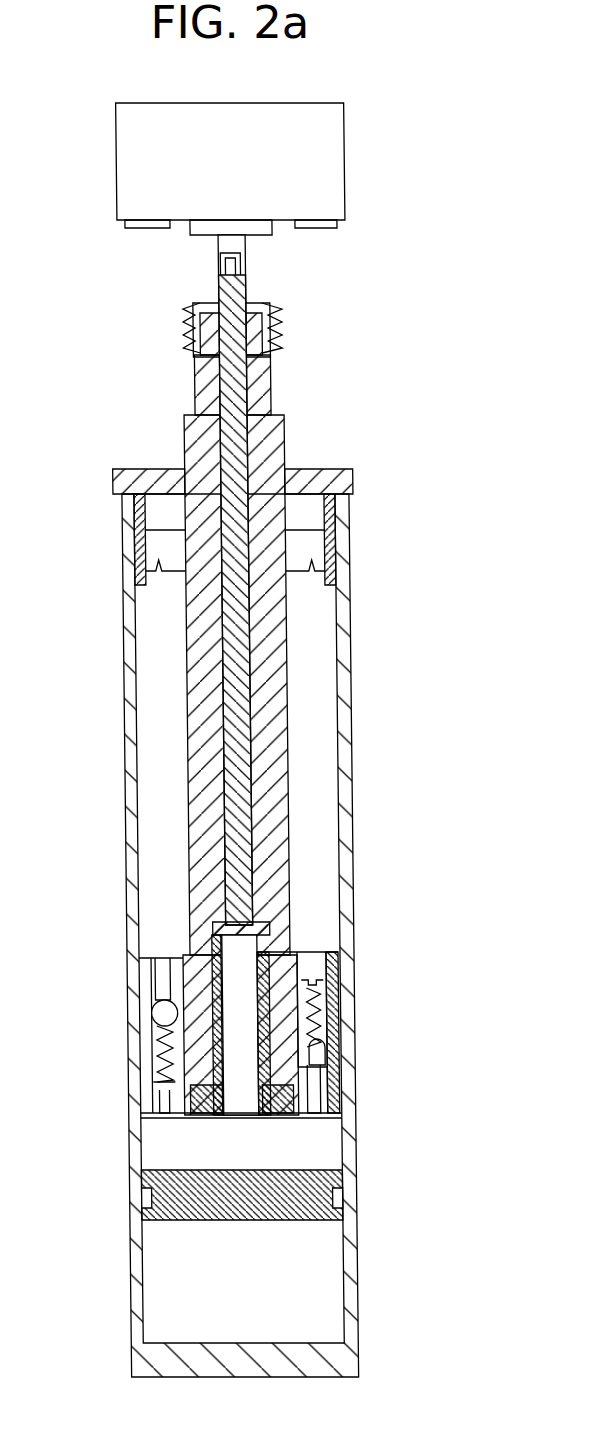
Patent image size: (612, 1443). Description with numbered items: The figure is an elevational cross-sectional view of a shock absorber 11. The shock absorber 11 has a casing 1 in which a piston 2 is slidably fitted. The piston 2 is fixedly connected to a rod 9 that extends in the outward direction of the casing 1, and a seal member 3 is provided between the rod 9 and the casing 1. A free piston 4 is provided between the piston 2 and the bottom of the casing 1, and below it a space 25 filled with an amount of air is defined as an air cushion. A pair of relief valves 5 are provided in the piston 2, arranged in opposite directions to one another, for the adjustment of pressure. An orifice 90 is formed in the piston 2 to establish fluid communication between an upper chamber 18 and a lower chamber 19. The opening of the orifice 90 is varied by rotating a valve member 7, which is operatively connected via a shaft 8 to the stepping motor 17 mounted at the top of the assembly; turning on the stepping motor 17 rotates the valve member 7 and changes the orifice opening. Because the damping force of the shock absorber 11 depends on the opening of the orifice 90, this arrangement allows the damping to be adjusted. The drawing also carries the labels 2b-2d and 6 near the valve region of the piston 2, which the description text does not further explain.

The stepping motor 17 is at (337, 163).
The rod 9 is at (274, 441).
The seal member 3 is at (315, 540).
The shock absorber 11 is at (353, 656).
The casing 1 is at (338, 712).
The shaft 8 is at (216, 663).
The upper chamber 18 is at (156, 818).
The piston 2 is at (177, 963).
The orifice 90 is at (270, 943).
The piston detail region 2b-2d is at (317, 945).
The valve pin 6 is at (202, 972).
The valve member 7 is at (201, 1043).
The relief valves 5 is at (172, 1015).
The lower chamber 19 is at (311, 1138).
The free piston 4 is at (290, 1190).
The space 25 is at (306, 1272).